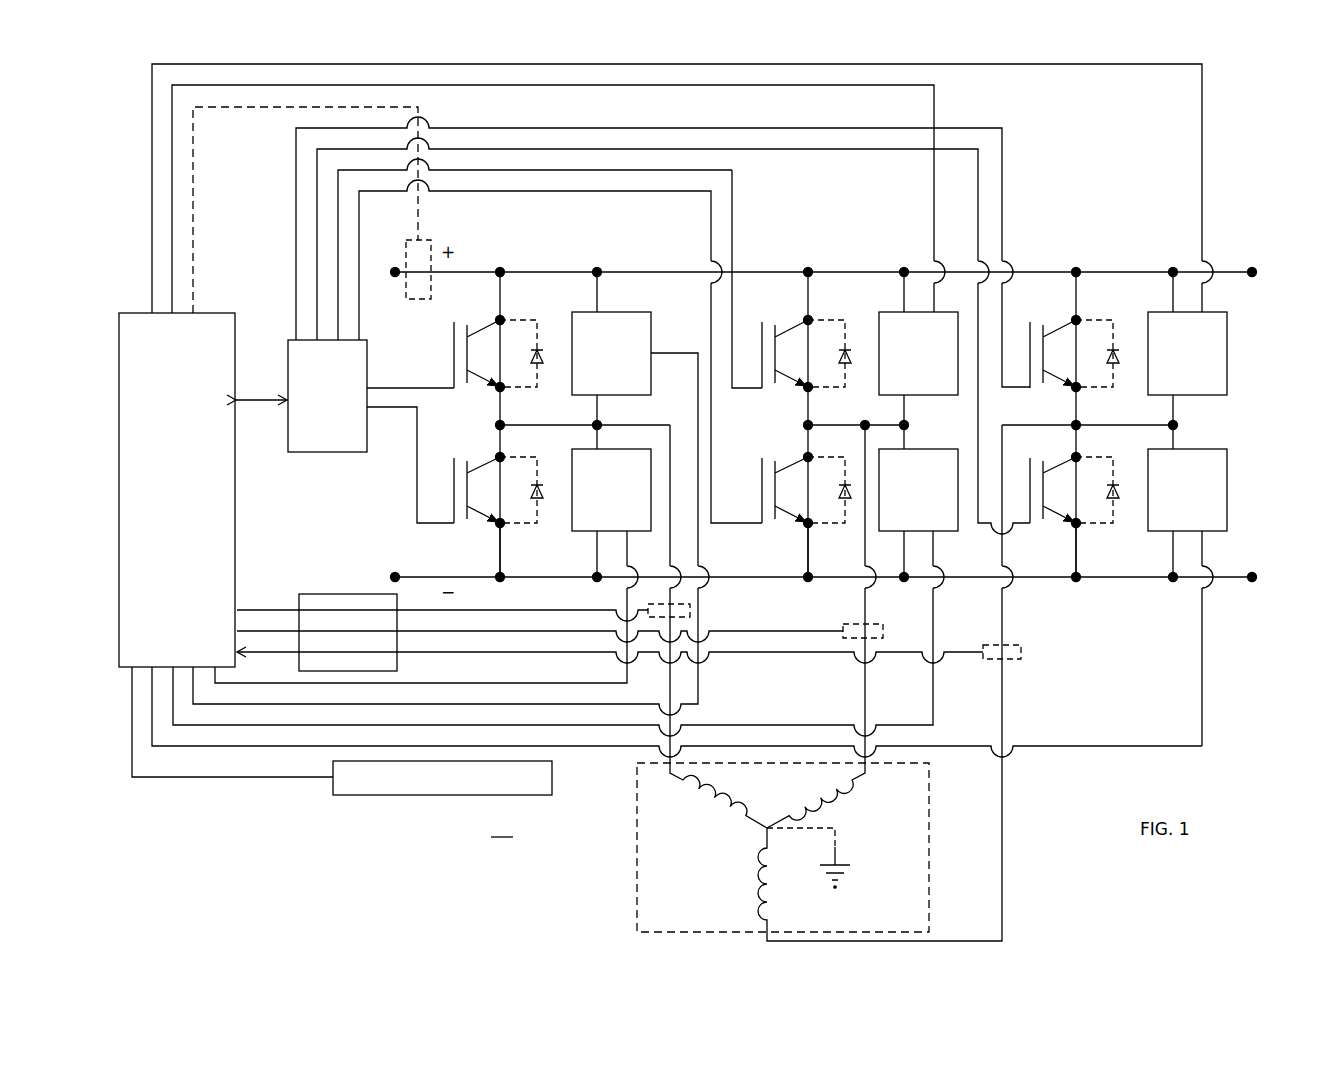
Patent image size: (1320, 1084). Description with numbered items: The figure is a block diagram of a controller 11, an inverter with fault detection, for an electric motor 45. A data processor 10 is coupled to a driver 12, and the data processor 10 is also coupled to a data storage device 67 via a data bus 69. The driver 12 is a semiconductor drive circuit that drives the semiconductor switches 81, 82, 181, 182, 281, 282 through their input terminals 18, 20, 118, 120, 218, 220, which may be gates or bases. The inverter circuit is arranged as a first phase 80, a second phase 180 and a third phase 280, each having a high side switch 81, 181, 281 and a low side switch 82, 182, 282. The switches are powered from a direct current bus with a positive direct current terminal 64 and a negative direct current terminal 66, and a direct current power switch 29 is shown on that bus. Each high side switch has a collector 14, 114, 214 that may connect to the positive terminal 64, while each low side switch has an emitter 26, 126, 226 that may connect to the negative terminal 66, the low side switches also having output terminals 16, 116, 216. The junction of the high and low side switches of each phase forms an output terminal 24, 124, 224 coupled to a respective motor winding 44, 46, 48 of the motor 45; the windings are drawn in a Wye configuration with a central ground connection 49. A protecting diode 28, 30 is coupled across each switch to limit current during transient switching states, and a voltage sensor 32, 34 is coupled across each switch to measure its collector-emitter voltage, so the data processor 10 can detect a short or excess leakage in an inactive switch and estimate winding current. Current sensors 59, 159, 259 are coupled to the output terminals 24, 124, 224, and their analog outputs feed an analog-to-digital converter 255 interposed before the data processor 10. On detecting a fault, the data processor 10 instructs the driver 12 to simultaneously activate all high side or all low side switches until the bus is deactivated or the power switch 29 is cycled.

The data processor 10 is at (216, 312).
The controller 11 is at (502, 826).
The driver 12 is at (287, 355).
The collector 14 is at (485, 325).
The output terminal 16 is at (485, 461).
The input terminal 18 is at (403, 387).
The input terminal 20 is at (415, 408).
The output terminal 24 is at (497, 425).
The emitter 26 is at (497, 525).
The protecting diode 28 is at (537, 345).
The direct current power switch 29 is at (431, 250).
The protecting diode 30 is at (537, 480).
The voltage sensor 32 is at (630, 312).
The voltage sensor 34 is at (580, 532).
The motor winding 44 is at (692, 802).
The electric motor 45 is at (637, 882).
The motor winding 46 is at (852, 792).
The motor winding 48 is at (776, 897).
The central ground connection 49 is at (838, 848).
The current sensor 59 is at (700, 613).
The positive direct current terminal 64 is at (1093, 272).
The negative direct current terminal 66 is at (1038, 580).
The data storage device 67 is at (552, 770).
The data bus 69 is at (178, 777).
The first phase 80 is at (569, 269).
The high side switch 81 is at (453, 357).
The low side switch 82 is at (453, 493).
The collector 114 is at (795, 330).
The output terminal 116 is at (790, 460).
The input terminal 118 is at (732, 222).
The input terminal 120 is at (711, 235).
The output terminal 124 is at (805, 425).
The emitter 126 is at (805, 525).
The current sensor 159 is at (845, 624).
The second phase 180 is at (824, 269).
The high side switch 181 is at (761, 355).
The low side switch 182 is at (761, 492).
The collector 214 is at (1063, 330).
The output terminal 216 is at (1072, 460).
The input terminal 218 is at (785, 128).
The input terminal 220 is at (793, 150).
The output terminal 224 is at (1080, 425).
The emitter 226 is at (1080, 525).
The analog-to-digital converter 255 is at (320, 594).
The current sensor 259 is at (1021, 652).
The third phase 280 is at (1106, 269).
The high side switch 281 is at (1029, 355).
The low side switch 282 is at (1029, 505).